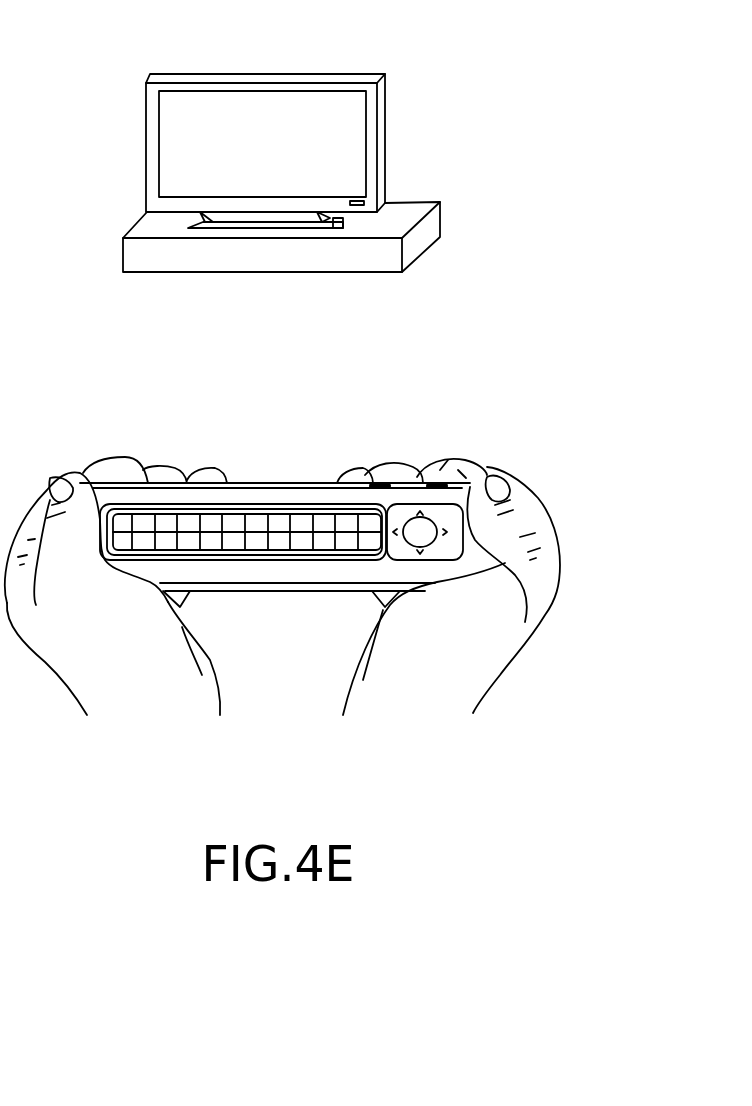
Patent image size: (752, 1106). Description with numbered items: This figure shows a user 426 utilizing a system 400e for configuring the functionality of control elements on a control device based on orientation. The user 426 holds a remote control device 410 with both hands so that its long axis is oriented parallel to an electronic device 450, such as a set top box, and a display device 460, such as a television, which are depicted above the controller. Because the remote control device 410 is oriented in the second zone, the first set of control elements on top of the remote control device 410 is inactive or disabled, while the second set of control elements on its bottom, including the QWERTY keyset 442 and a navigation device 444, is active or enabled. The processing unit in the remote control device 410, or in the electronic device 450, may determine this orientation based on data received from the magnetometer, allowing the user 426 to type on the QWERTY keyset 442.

The system 400e is at (560, 167).
The display device 460 is at (279, 92).
The electronic device 450 is at (423, 239).
The remote control device 410 is at (295, 483).
The QWERTY keyset 442 is at (188, 518).
The directional pad / navigation control 444 is at (418, 530).
The user 426 is at (560, 580).